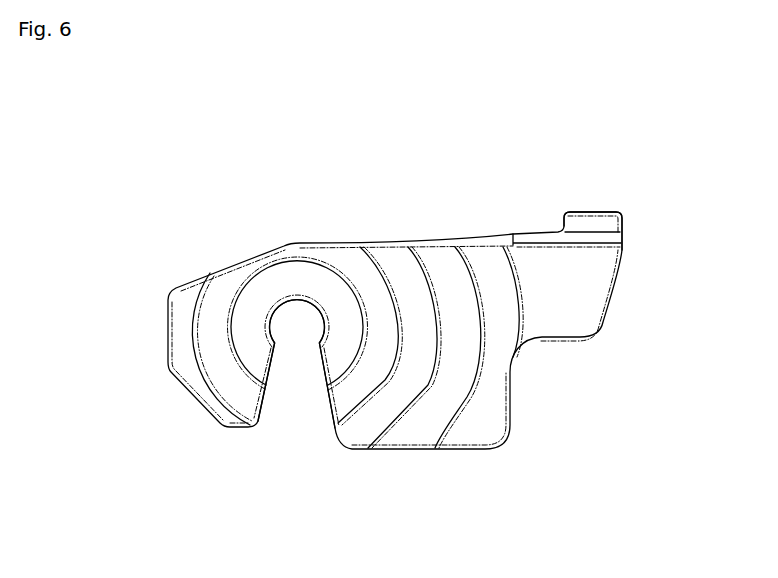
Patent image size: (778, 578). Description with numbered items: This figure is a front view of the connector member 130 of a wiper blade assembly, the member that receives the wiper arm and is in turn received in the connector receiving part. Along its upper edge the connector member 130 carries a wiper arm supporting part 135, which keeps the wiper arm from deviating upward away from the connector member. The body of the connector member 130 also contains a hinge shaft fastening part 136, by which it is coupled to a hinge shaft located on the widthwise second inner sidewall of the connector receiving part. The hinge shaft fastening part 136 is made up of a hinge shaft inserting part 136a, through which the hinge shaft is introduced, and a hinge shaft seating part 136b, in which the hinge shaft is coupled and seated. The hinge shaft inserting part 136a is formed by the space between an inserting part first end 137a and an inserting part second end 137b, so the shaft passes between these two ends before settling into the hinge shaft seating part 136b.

The connector member 130 is at (402, 316).
The wiper arm supporting part 135 is at (588, 208).
The hinge shaft fastening part 136 is at (276, 419).
The hinge shaft inserting part 136a is at (310, 408).
The hinge shaft seating part 136b is at (303, 327).
The inserting part first end 137a is at (230, 395).
The inserting part second end 137b is at (352, 398).